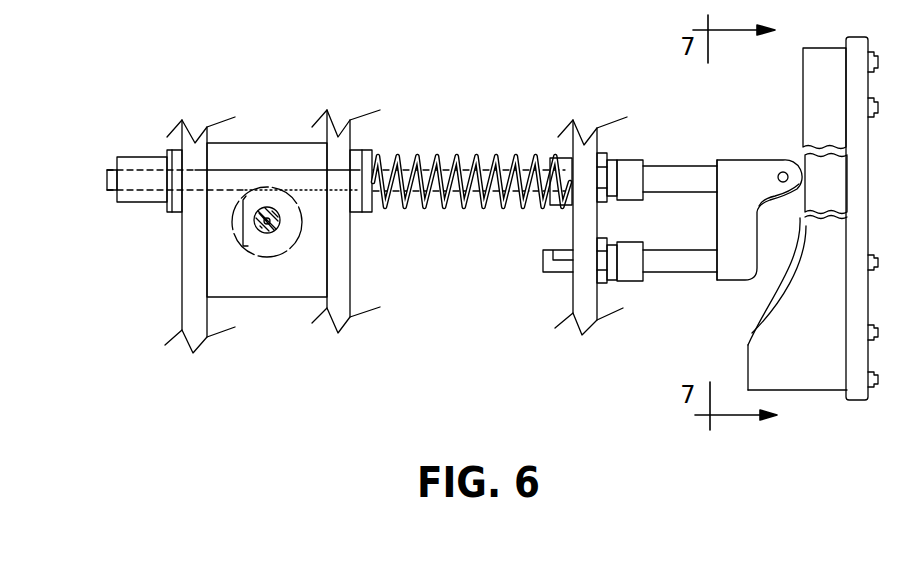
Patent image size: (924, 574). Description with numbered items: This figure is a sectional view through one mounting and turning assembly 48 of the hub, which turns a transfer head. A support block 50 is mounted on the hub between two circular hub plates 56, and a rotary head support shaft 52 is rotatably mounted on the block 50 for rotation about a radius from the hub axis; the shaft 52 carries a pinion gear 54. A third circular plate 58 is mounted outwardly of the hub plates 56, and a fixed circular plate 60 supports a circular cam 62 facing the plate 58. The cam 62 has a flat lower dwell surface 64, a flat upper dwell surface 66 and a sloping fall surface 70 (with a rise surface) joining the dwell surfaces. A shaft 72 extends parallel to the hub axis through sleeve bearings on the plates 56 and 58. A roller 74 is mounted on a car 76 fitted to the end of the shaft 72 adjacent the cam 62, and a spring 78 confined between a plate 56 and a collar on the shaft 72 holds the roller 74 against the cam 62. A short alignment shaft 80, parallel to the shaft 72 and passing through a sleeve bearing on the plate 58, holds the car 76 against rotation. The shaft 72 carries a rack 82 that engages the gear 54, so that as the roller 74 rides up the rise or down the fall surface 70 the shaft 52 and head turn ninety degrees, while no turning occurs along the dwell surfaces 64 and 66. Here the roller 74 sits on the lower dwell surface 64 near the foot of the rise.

The mounting and turning assembly 48 is at (404, 110).
The support block 50 is at (282, 297).
The rotary head support shaft 52 is at (265, 233).
The pinion gear 54 is at (282, 237).
The circular hub plates 56 is at (190, 253).
The third circular plate 58 is at (585, 297).
The fixed circular plate 60 is at (858, 395).
The circular cam 62 is at (810, 390).
The flat lower dwell surface 64 is at (803, 95).
The flat upper dwell surface 66 is at (747, 367).
The fall surface 70 is at (763, 315).
The shaft 72 is at (238, 170).
The roller 74 is at (787, 201).
The car 76 is at (733, 160).
The spring 78 is at (460, 157).
The short alignment shaft 80 is at (680, 273).
The rack 82 is at (313, 190).